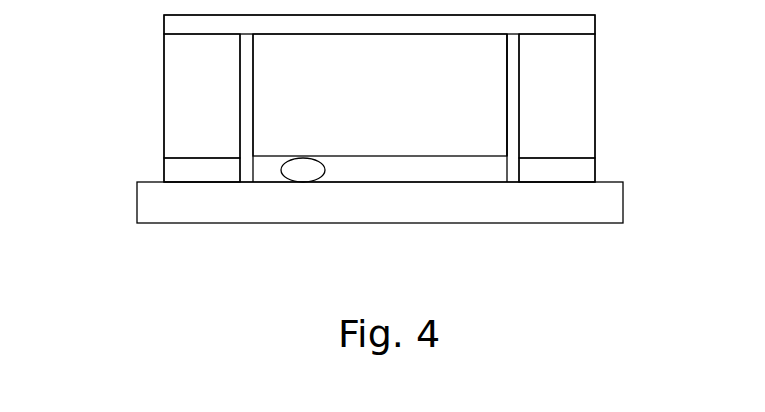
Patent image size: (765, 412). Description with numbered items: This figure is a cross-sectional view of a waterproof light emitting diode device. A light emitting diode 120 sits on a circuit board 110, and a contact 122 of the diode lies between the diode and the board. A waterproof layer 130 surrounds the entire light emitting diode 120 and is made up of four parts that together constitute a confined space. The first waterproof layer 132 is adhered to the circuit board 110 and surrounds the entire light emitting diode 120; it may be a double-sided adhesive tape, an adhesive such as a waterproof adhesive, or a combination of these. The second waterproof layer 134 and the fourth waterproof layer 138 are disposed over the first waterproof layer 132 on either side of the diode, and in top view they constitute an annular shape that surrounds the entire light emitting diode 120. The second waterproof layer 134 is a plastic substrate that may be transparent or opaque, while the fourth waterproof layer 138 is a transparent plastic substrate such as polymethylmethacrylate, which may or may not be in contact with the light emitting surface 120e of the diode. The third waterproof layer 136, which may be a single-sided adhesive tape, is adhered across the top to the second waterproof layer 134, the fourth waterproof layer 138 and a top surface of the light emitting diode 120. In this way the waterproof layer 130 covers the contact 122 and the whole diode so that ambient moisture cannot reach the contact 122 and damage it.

The circuit board 110 is at (524, 207).
The light emitting diode 120 is at (438, 143).
The light emitting surface 120e is at (512, 93).
The contact 122 is at (303, 174).
The waterproof layer 130 is at (103, 3).
The first waterproof layer 132 is at (178, 166).
The second waterproof layer 134 is at (178, 93).
The third waterproof layer 136 is at (178, 24).
The fourth waterproof layer 138 is at (582, 128).